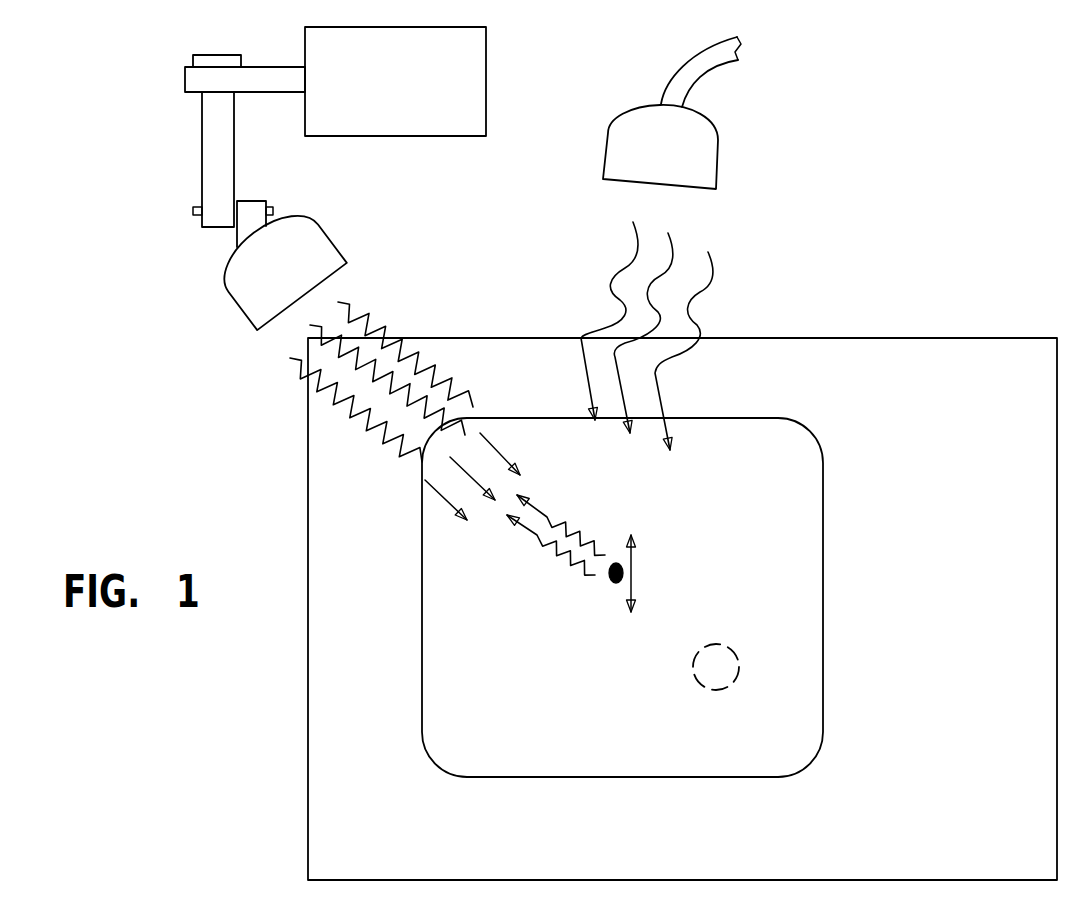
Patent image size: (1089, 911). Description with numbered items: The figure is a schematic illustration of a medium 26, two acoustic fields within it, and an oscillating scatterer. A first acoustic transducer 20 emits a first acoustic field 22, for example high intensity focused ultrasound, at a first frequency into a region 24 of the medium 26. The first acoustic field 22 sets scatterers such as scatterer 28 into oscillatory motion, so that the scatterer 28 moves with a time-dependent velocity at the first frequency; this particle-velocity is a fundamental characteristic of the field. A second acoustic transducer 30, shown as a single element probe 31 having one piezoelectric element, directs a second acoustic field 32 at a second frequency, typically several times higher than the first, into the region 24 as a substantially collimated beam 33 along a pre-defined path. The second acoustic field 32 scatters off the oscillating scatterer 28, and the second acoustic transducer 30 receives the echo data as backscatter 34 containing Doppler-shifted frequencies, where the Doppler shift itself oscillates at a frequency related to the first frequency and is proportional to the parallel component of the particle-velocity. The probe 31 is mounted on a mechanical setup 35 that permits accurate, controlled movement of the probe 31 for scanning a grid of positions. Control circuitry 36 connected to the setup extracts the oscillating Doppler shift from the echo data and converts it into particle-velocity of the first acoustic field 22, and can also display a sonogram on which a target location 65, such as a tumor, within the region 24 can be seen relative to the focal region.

The first acoustic transducer 20 is at (718, 167).
The first acoustic field 22 is at (712, 342).
The region 24 is at (751, 761).
The medium 26 is at (991, 802).
The scatterer 28 is at (610, 580).
The second acoustic transducer 30 is at (243, 264).
The single element probe 31 is at (240, 276).
The second acoustic field 32 is at (438, 398).
The collimated beam 33 is at (438, 350).
The backscatter 34 is at (587, 520).
The mechanical setup 35 is at (203, 127).
The control circuitry 36 is at (487, 95).
The target location 65 is at (739, 665).